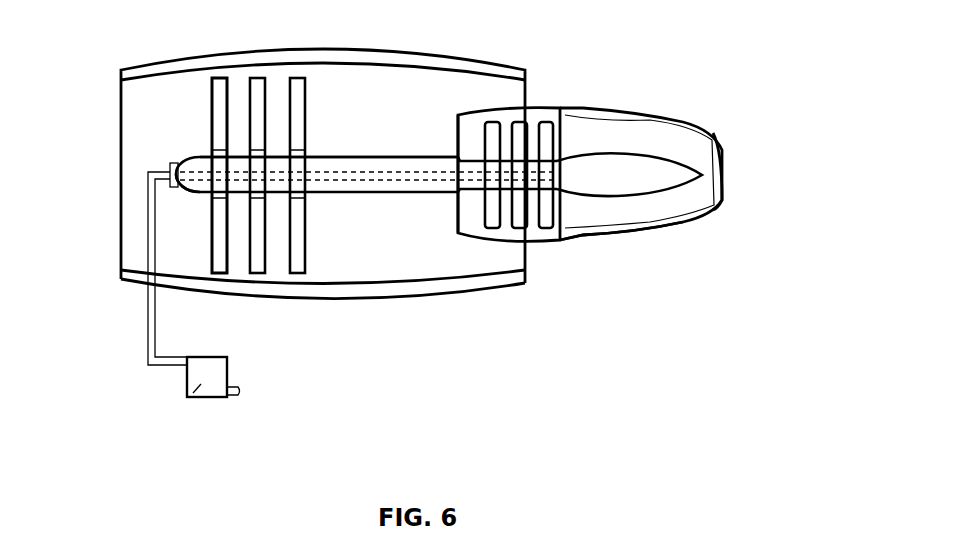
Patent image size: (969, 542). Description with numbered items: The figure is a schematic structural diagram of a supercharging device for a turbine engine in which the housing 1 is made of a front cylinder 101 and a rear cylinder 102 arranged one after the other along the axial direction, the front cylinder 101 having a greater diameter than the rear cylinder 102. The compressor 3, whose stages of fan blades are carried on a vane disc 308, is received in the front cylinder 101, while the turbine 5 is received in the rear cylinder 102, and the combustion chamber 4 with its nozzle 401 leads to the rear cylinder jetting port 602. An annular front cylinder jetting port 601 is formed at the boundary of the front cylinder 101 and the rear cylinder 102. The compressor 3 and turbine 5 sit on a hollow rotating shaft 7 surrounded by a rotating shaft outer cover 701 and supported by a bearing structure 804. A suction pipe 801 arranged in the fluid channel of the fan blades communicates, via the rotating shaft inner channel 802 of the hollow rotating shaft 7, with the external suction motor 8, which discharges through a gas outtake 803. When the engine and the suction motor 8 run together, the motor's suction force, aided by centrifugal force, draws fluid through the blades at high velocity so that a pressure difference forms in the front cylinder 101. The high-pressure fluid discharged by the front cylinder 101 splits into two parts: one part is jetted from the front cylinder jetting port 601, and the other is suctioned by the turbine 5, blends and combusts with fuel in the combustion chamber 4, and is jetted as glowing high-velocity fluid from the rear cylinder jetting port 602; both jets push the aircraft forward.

The housing 1 is at (183, 54).
The front cylinder 101 is at (291, 300).
The rear cylinder 102 is at (603, 240).
The compressor 3 is at (211, 217).
The vane disc 308 is at (211, 148).
The combustion chamber 4 is at (628, 137).
The nozzle 401 is at (570, 110).
The turbine 5 is at (475, 238).
The front cylinder jetting port 601 is at (528, 105).
The rear cylinder jetting port 602 is at (790, 149).
The rotating shaft 7 is at (408, 163).
The rotating shaft outer cover 701 is at (172, 162).
The suction motor 8 is at (186, 397).
The suction pipe 801 is at (147, 308).
The rotating shaft inner channel 802 is at (363, 170).
The gas outtake 803 is at (240, 395).
The bearing structure 804 is at (178, 188).